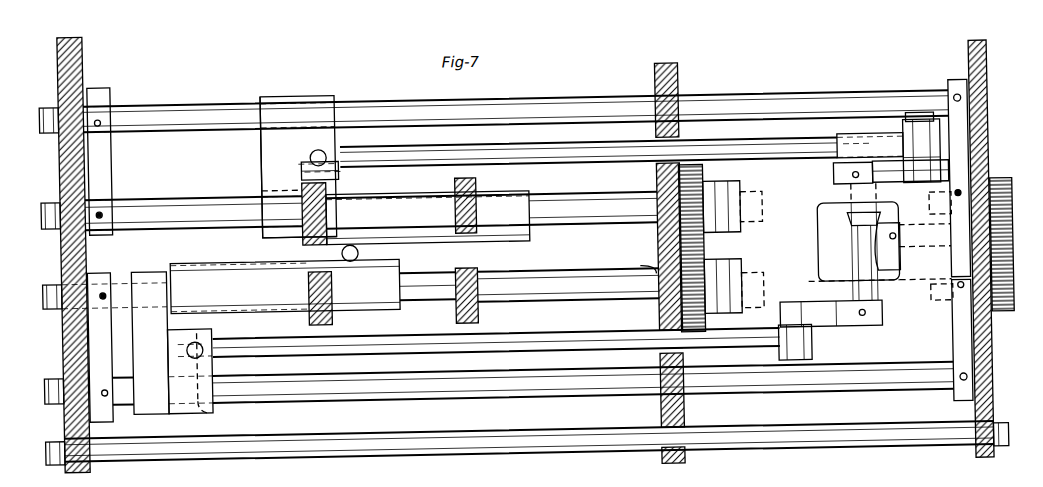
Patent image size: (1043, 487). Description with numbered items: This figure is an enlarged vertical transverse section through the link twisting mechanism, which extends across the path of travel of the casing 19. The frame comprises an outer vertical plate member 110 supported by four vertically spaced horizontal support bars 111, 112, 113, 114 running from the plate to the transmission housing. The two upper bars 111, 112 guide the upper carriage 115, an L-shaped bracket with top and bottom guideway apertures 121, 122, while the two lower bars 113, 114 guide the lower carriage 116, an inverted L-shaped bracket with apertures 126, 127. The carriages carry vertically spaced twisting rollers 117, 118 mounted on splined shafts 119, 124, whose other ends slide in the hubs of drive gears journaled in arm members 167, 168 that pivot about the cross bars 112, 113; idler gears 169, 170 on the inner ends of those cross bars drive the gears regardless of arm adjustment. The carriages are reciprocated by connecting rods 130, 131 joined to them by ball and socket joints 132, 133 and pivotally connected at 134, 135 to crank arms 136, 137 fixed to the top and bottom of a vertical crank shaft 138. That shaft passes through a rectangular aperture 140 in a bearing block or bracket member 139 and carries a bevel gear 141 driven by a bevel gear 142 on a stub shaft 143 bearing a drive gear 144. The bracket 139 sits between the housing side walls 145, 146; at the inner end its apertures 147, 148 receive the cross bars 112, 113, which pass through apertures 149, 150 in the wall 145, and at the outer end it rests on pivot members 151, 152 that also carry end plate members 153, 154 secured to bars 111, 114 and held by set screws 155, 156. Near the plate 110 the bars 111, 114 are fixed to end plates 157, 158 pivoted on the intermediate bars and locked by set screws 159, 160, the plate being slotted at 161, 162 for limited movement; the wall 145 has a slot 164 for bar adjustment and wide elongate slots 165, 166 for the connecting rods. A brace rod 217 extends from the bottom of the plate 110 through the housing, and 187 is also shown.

The outer vertical plate member 110 is at (86, 62).
The support bar 111 is at (168, 99).
The support bar 112 is at (170, 194).
The support bar 113 is at (126, 268).
The support bar 114 is at (382, 398).
The upper carriage 115 is at (262, 151).
The lower carriage 116 is at (154, 409).
The upper twisting roller 117 is at (426, 250).
The lower twisting roll 118 is at (404, 300).
The splined shaft 119 is at (536, 227).
The guideway forming aperture 121 is at (352, 98).
The guideway forming aperture 122 is at (270, 190).
The splined shaft 124 is at (534, 270).
The guideway forming aperture 126 is at (166, 262).
The guideway forming aperture 127 is at (203, 408).
The connecting rod 130 is at (503, 164).
The connecting rod 131 is at (536, 340).
The ball and socket joint 132 is at (314, 150).
The ball and socket joint 133 is at (186, 348).
The pivotal connection 134 is at (905, 142).
The pivotal connection 135 is at (812, 350).
The crank arm 136 is at (858, 169).
The crank arm 137 is at (826, 332).
The vertical crank shaft 138 is at (855, 251).
The bearing block or bracket member 139 is at (796, 199).
The rectangular aperture 140 is at (818, 287).
The bevel gear 141 is at (848, 224).
The bevel gear 142 is at (890, 266).
The stub shaft 143 is at (940, 238).
The drive gear 144 is at (1012, 250).
The inner side wall 145 is at (657, 77).
The outer side wall 146 is at (982, 146).
The end wall aperture 147 is at (745, 226).
The end wall aperture 148 is at (746, 280).
The aperture 149 is at (594, 233).
The aperture 150 is at (652, 270).
The pivot member 151 is at (931, 201).
The pivot member 152 is at (938, 306).
The upper end plate member 153 is at (965, 133).
The lower end plate member 154 is at (940, 338).
The set screw 155 is at (960, 198).
The set screw 156 is at (930, 296).
The end plate 157 is at (113, 158).
The end plate 158 is at (95, 332).
The set screw 159 is at (103, 205).
The set screw 160 is at (103, 286).
The slot 161 is at (328, 190).
The slot 162 is at (455, 182).
The slot 164 is at (332, 318).
The elongate slot 165 is at (478, 315).
The elongate slot 166 is at (662, 333).
The arm member 167 is at (730, 186).
The arm member 168 is at (740, 270).
The idler gear 169 is at (665, 188).
The idler gear 170 is at (700, 330).
The base 187 is at (525, 480).
The casing 19 is at (360, 252).
The brace rod or bar 217 is at (782, 431).